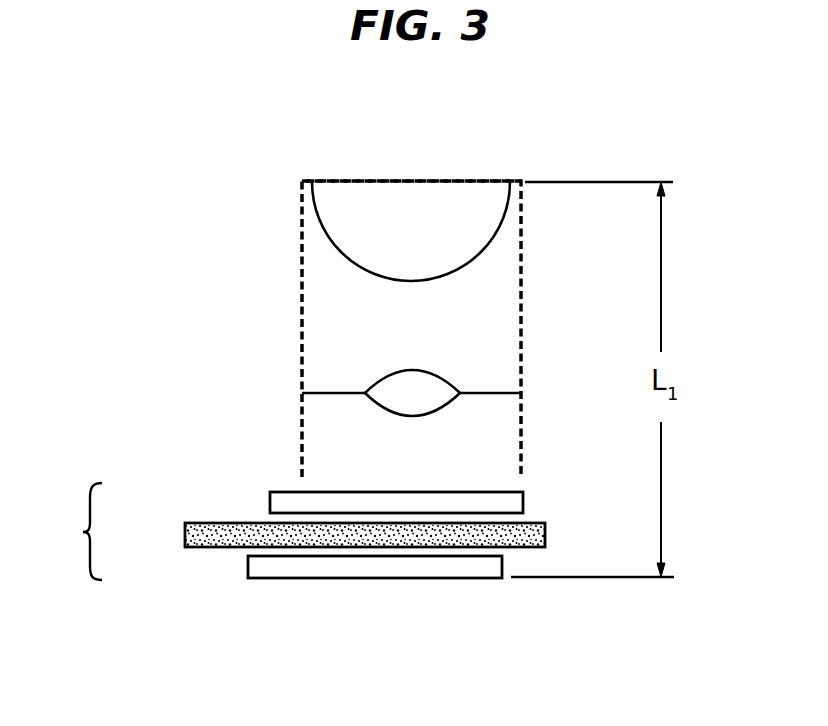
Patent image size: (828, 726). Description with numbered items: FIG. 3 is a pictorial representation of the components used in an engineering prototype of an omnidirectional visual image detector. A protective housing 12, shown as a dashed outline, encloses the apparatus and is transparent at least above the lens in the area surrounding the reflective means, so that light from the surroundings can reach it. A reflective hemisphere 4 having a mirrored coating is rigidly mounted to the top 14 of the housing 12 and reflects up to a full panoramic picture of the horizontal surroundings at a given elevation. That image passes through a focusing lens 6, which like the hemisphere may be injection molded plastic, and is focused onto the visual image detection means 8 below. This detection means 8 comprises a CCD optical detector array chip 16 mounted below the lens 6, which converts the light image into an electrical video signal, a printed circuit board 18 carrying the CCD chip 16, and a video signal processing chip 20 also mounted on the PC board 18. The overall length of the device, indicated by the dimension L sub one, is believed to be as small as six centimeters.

The reflective hemisphere 4 is at (362, 268).
The focusing lens 6 is at (425, 371).
The visual image detection means 8 is at (76, 531).
The protective housing 12 is at (300, 346).
The top of the housing 14 is at (500, 178).
The CCD optical detector array chip 16 is at (286, 491).
The printed circuit board 18 is at (185, 534).
The video signal processing chip 20 is at (270, 578).